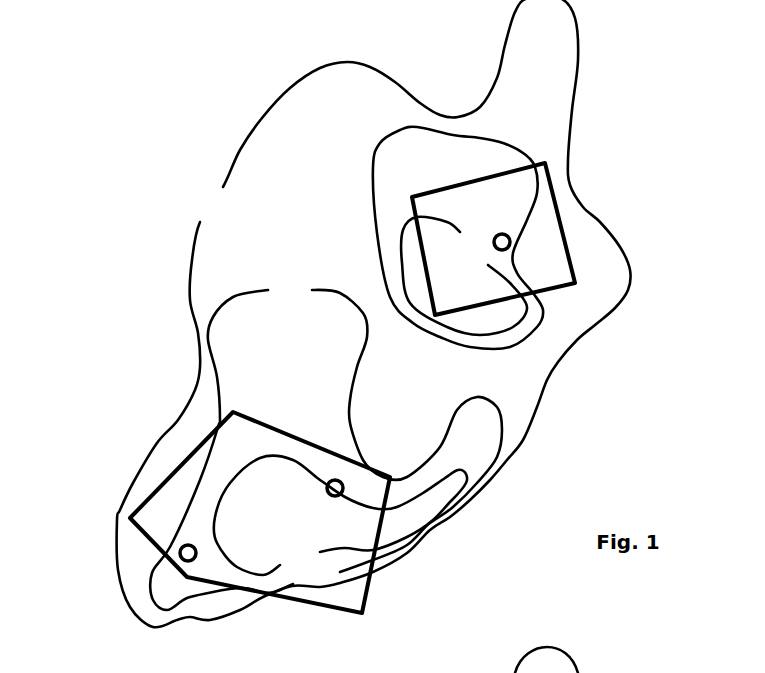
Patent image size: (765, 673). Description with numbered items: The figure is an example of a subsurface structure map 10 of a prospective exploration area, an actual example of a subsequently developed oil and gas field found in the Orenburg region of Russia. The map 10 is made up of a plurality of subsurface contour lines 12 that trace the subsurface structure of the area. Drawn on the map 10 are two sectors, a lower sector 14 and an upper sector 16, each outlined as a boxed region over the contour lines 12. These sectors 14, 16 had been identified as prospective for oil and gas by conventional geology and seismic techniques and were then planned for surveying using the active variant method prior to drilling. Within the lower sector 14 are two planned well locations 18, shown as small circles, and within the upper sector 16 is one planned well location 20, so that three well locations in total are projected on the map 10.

The subsurface structure map 10 is at (611, 179).
The subsurface contour lines 12 is at (413, 330).
The lower sector 14 is at (247, 543).
The upper sector 16 is at (550, 272).
The planned well locations 18 is at (343, 480).
The planned well location 20 is at (510, 232).